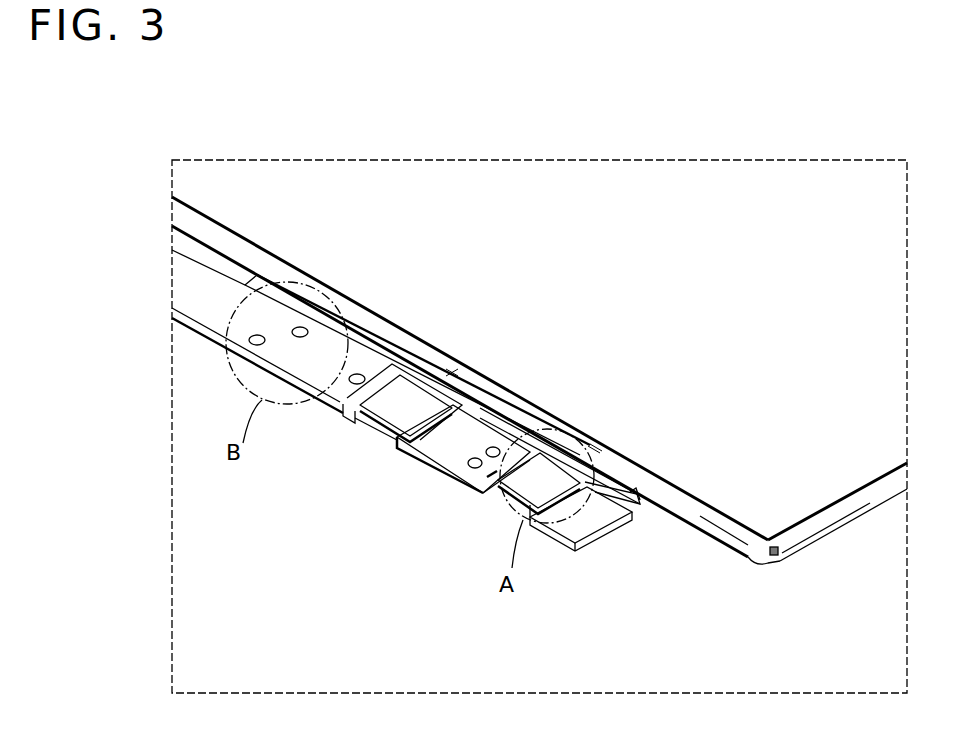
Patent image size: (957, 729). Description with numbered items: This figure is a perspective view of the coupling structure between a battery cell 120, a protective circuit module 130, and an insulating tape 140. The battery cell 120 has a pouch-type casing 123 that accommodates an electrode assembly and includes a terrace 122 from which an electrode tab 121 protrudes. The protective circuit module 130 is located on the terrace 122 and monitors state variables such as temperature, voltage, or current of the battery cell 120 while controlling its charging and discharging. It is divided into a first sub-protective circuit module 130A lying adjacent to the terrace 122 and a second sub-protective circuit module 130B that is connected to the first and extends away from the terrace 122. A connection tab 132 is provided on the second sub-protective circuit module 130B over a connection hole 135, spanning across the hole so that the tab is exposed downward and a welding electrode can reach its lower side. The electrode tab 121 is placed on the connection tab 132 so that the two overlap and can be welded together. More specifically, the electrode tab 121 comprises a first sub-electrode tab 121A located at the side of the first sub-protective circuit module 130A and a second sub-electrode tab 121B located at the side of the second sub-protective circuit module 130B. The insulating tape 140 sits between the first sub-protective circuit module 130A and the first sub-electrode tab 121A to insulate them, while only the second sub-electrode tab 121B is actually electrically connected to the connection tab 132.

The battery cell 120 is at (797, 176).
The electrode tab 121 is at (696, 357).
The first sub-electrode tab 121A is at (602, 473).
The second sub-electrode tab 121B is at (548, 477).
The terrace 122 is at (730, 535).
The casing 123 is at (812, 533).
The protective circuit module 130 is at (70, 232).
The first sub-protective circuit module 130A is at (183, 242).
The second sub-protective circuit module 130B is at (183, 292).
The connection tab 132 is at (487, 477).
The connection hole 135 is at (508, 505).
The insulating tape 140 is at (502, 427).